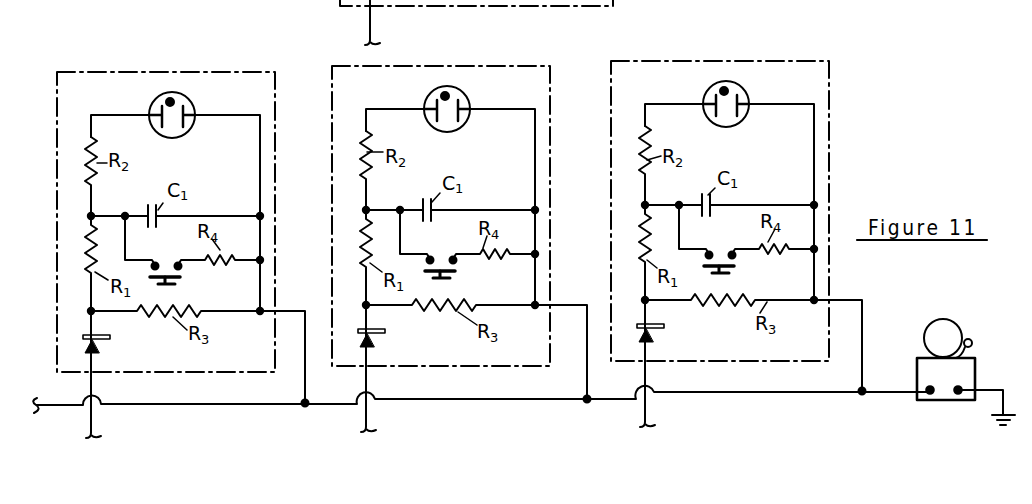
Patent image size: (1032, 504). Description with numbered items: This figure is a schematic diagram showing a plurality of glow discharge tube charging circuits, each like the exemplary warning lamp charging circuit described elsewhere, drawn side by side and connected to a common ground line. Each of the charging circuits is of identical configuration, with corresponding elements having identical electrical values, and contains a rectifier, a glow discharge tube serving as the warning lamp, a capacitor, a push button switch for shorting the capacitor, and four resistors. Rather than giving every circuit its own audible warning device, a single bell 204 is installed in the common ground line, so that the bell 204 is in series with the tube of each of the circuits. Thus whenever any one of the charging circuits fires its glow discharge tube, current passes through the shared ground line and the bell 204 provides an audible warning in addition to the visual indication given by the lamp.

The bell 204 is at (967, 368).